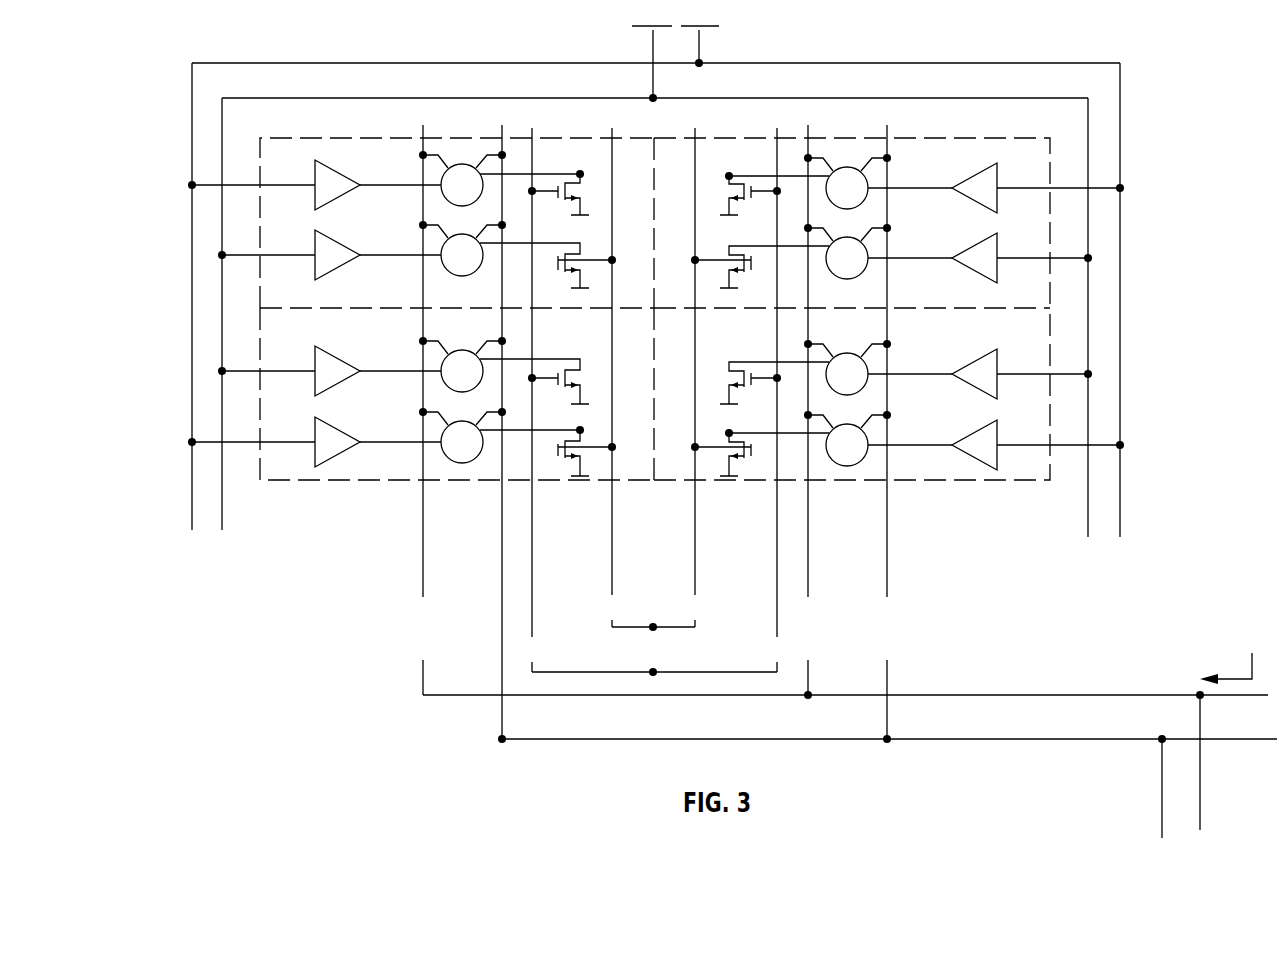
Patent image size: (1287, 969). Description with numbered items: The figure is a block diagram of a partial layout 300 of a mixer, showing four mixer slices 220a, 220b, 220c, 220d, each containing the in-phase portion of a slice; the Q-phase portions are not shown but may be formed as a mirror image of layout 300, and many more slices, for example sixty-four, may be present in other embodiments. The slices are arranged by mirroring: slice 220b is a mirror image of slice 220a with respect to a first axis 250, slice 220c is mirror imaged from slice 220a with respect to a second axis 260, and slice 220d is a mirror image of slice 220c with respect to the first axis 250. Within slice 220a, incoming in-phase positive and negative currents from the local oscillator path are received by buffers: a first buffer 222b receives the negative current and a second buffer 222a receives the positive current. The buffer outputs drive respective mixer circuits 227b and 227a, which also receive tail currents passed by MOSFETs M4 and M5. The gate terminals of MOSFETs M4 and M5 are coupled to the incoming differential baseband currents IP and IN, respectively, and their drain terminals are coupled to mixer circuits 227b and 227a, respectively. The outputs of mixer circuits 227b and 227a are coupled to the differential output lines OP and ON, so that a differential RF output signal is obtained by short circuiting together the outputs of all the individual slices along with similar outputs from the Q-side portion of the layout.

The partial layout 300 is at (274, 29).
The mixer slice 220a is at (298, 137).
The mixer slice 220b is at (1010, 139).
The mixer slice 220c is at (330, 481).
The mixer slice 220d is at (950, 483).
The second buffer 222a is at (337, 240).
The first buffer 222b is at (337, 170).
The mixer circuit 227a is at (474, 237).
The mixer circuit 227b is at (463, 164).
The first axis 250 is at (655, 178).
The second axis 260 is at (686, 312).
The MOSFET M4 is at (654, 287).
The MOSFET M5 is at (654, 353).